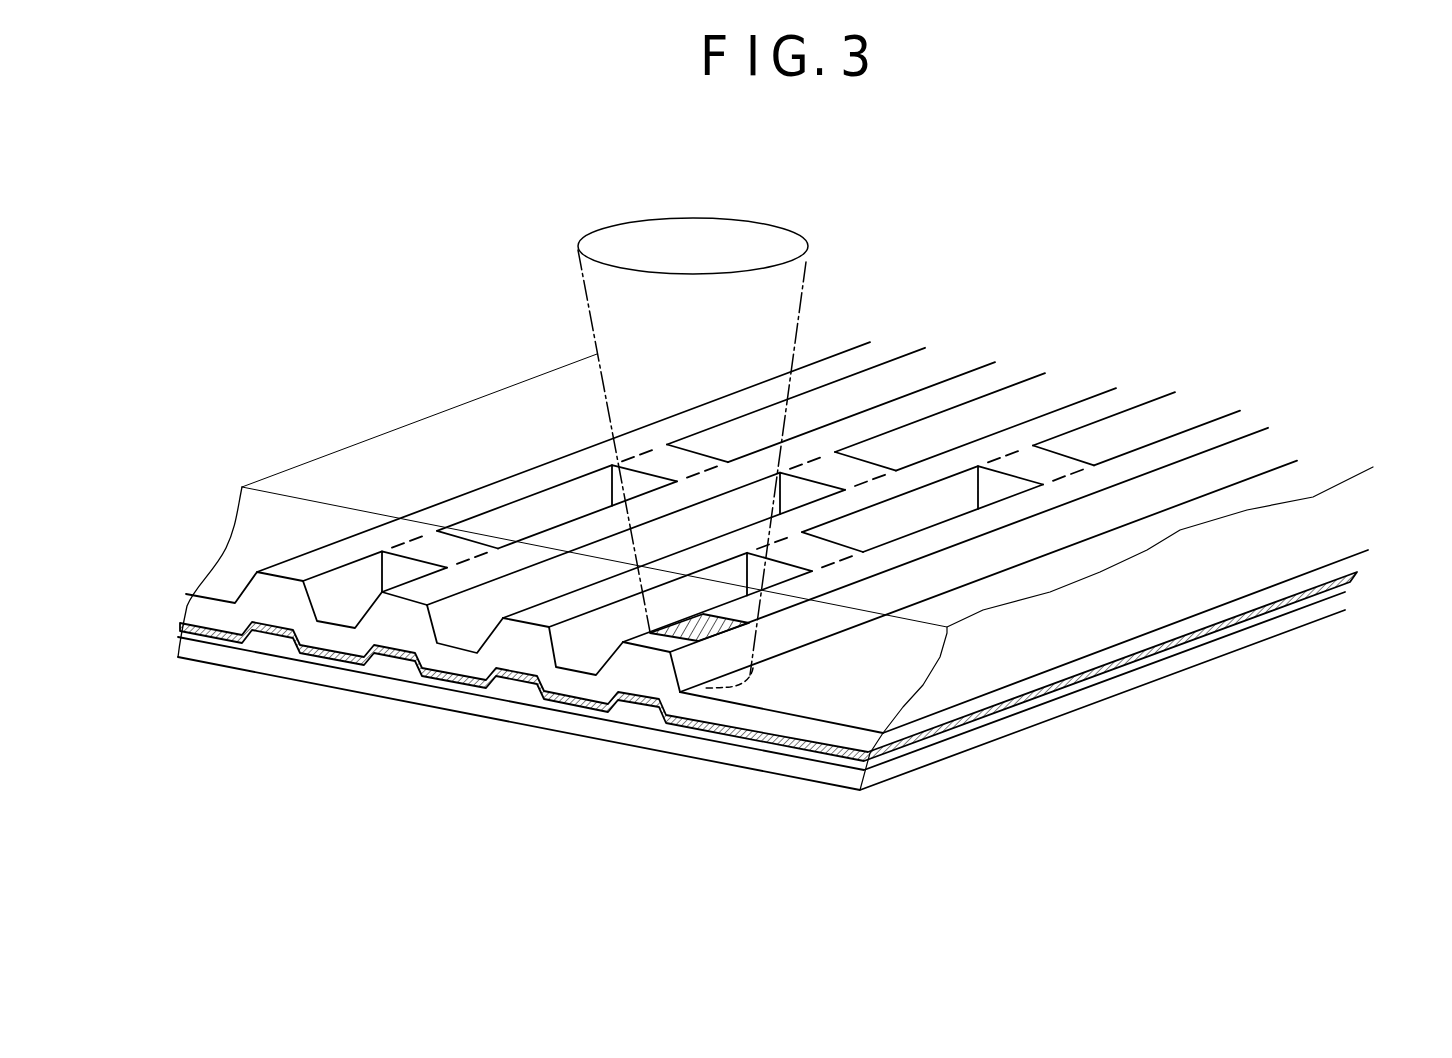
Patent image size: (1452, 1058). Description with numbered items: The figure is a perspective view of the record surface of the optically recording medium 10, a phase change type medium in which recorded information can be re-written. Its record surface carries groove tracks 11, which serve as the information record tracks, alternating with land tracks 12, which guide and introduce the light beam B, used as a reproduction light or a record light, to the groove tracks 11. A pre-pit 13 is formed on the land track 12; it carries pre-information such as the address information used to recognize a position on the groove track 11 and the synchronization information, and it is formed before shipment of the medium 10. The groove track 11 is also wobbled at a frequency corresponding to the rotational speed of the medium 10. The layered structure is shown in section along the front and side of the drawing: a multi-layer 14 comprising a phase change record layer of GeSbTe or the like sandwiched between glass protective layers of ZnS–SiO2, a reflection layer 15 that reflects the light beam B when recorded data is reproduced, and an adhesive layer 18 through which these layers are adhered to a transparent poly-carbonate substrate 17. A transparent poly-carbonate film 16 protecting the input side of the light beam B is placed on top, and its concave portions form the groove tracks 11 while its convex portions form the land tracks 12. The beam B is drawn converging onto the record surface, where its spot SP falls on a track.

The optically recording medium 10 is at (1180, 310).
The groove track 11 is at (1195, 433).
The land track 12 is at (466, 634).
The pre-pit 13 is at (660, 461).
The multi-layer 14 is at (457, 663).
The reflection layer 15 is at (310, 653).
The transparent film 16 is at (1320, 538).
The transparent substrate 17 is at (208, 653).
The adhesive layer 18 is at (630, 716).
The light beam B is at (583, 285).
The beam spot SP is at (724, 657).